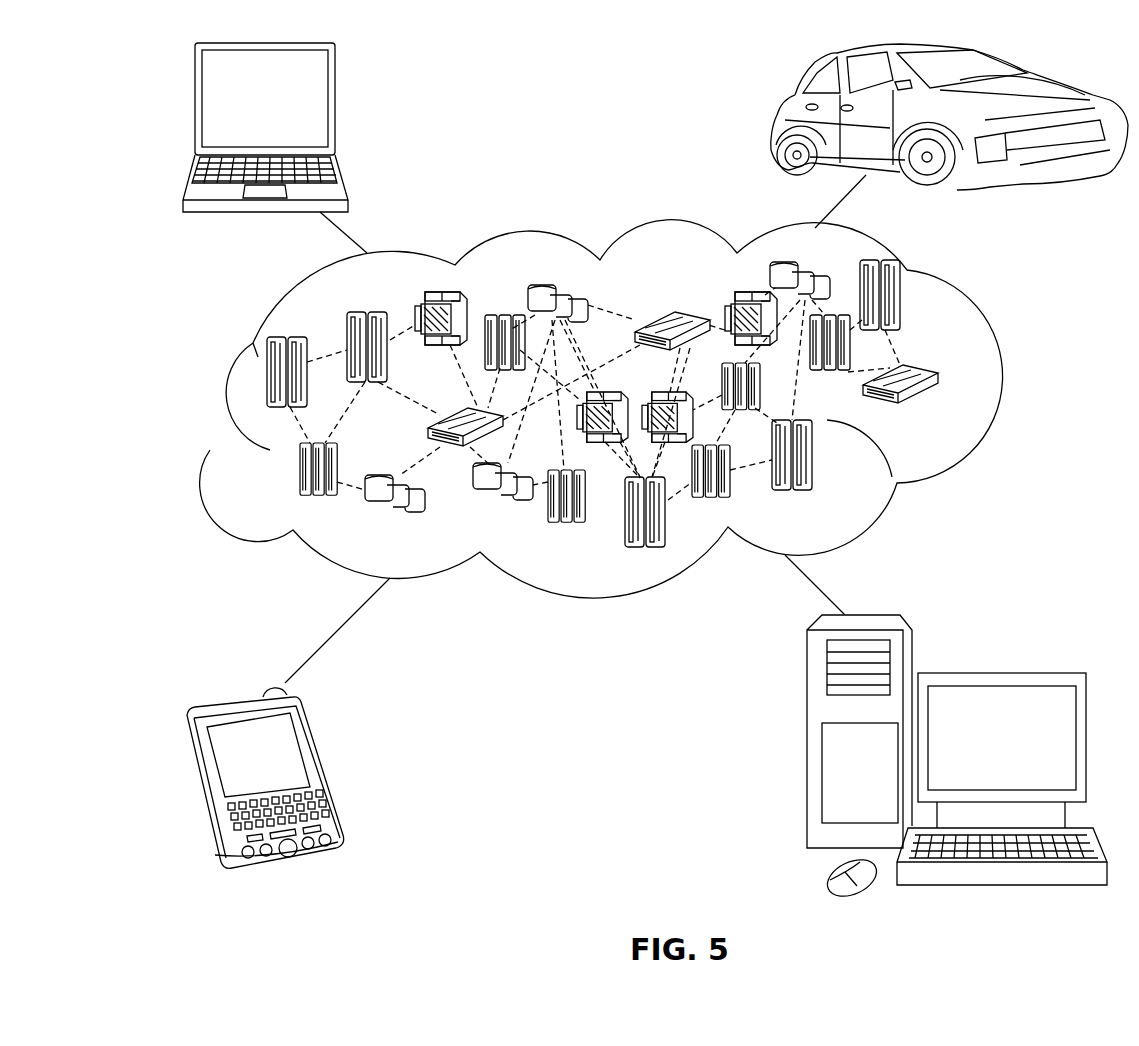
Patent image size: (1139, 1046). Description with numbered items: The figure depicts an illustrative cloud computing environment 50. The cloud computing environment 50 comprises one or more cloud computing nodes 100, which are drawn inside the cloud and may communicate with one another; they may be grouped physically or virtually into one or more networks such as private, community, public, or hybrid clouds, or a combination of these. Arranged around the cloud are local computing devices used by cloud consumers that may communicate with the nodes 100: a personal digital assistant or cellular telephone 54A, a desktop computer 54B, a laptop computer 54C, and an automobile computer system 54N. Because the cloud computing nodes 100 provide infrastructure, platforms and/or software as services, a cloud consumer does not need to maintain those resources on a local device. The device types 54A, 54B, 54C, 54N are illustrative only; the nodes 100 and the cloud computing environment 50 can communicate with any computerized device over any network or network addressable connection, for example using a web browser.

The cloud computing environment 50 is at (1000, 383).
The cloud computing nodes 100 is at (955, 418).
The personal digital assistant or cellular telephone 54A is at (323, 767).
The desktop computer 54B is at (998, 673).
The laptop computer 54C is at (337, 107).
The automobile computer system 54N is at (779, 122).